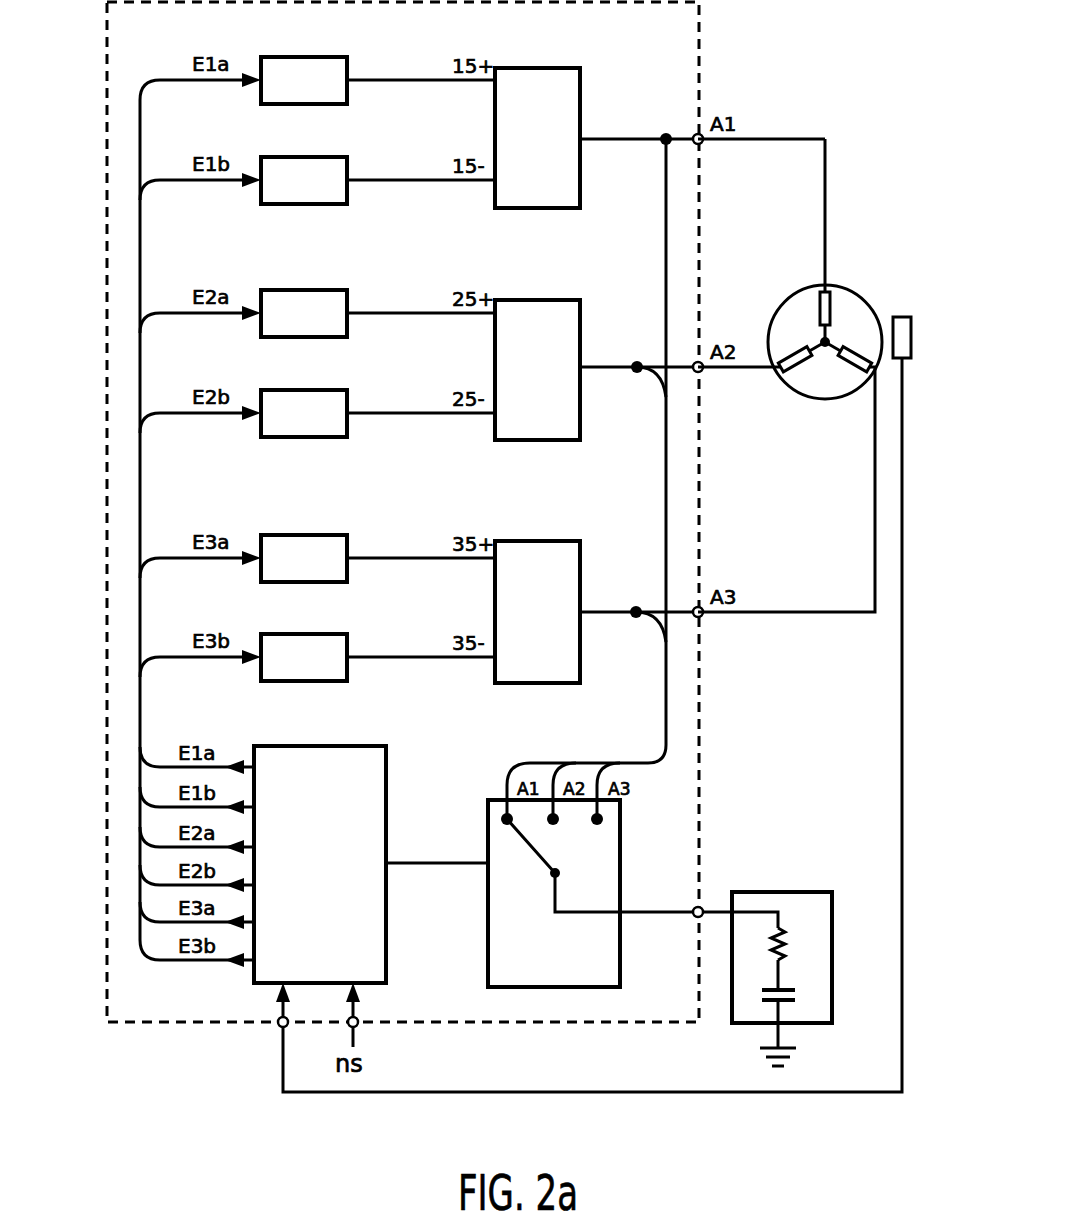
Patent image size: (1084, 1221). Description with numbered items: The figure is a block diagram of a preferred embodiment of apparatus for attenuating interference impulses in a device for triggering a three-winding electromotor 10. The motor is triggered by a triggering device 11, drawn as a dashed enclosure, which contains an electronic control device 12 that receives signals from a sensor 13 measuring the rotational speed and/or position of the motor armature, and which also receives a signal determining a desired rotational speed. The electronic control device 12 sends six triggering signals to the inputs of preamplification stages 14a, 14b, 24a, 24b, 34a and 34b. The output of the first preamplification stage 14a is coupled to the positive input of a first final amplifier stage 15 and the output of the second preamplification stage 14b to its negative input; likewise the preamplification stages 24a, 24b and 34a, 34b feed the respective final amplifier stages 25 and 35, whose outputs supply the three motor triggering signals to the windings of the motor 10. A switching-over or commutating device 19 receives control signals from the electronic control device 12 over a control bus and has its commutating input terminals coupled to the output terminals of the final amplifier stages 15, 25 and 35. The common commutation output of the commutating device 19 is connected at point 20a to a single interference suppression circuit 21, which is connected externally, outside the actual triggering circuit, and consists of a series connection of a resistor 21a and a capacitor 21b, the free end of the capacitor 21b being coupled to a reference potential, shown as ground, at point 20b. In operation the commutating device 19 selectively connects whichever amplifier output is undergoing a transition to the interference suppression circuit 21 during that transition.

The three-winding electromotor 10 is at (798, 290).
The triggering device 11 is at (699, 700).
The electronic control device 12 is at (386, 942).
The sensor 13 is at (899, 317).
The first preamplification stage 14a is at (318, 57).
The second preamplification stage 14b is at (312, 204).
The first final amplifier stage 15 is at (531, 208).
The commutating device 19 is at (488, 976).
The point 20a is at (701, 908).
The point 20b is at (788, 1040).
The interference suppression circuit 21 is at (798, 970).
The resistor 21a is at (789, 946).
The capacitor 21b is at (796, 990).
The preamplification stage 24a is at (318, 290).
The preamplification stage 24b is at (312, 437).
The final amplifier stage 25 is at (531, 440).
The preamplification stage 34a is at (318, 535).
The preamplification stage 34b is at (297, 681).
The final amplifier stage 35 is at (529, 683).